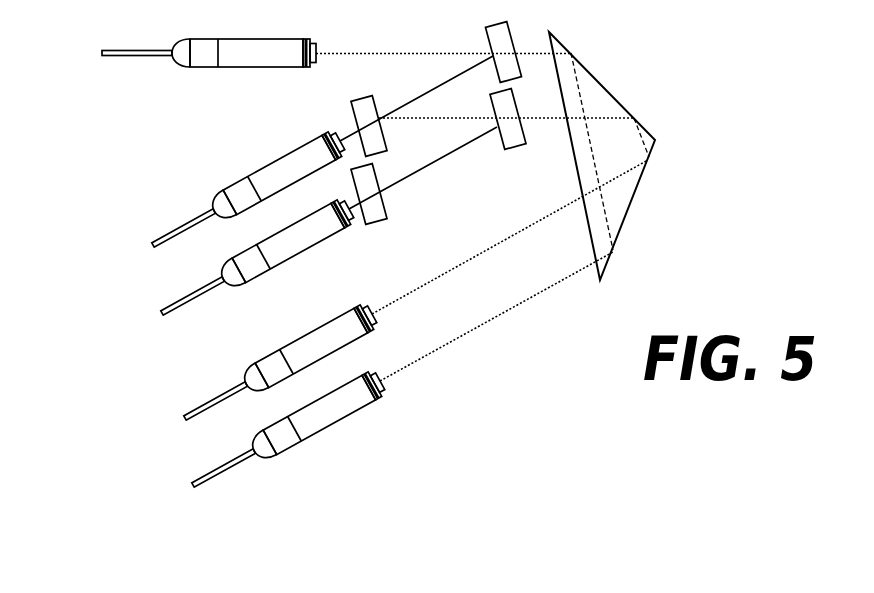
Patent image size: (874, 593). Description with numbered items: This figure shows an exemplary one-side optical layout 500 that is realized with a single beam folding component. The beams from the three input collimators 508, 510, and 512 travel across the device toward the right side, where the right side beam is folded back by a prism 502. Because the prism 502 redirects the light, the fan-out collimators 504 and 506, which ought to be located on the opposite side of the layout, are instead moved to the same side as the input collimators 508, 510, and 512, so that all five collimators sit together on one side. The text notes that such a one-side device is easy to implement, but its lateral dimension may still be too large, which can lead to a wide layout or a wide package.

The light source module / beam combining system 500 is at (496, 194).
The prism 502 is at (614, 156).
The fan-out collimator 504 is at (286, 433).
The fan-out collimator 506 is at (293, 366).
The input collimator 508 is at (255, 261).
The input collimator 510 is at (246, 193).
The input collimator 512 is at (209, 39).